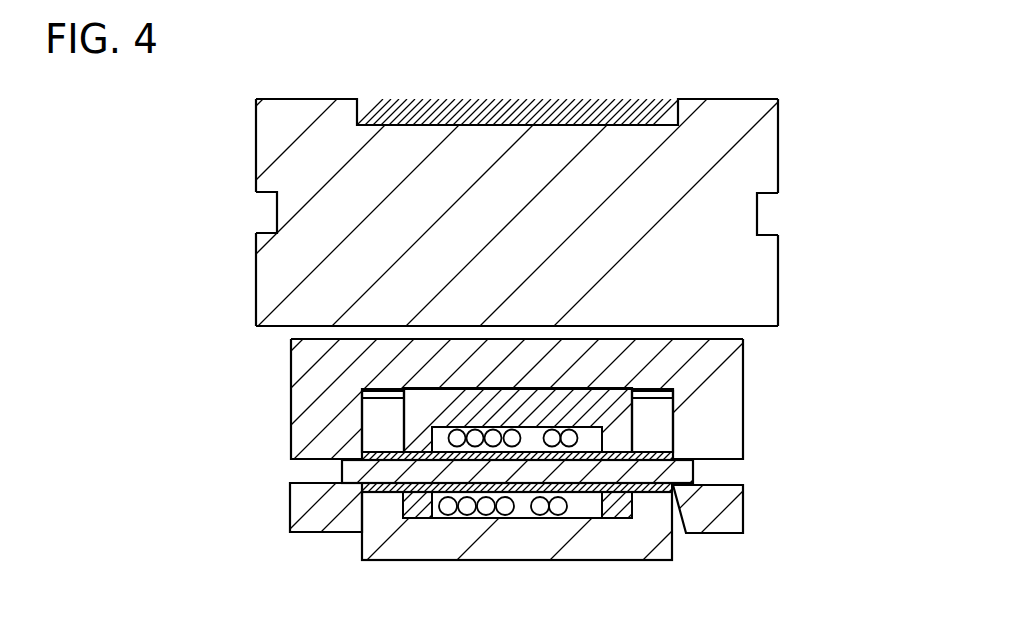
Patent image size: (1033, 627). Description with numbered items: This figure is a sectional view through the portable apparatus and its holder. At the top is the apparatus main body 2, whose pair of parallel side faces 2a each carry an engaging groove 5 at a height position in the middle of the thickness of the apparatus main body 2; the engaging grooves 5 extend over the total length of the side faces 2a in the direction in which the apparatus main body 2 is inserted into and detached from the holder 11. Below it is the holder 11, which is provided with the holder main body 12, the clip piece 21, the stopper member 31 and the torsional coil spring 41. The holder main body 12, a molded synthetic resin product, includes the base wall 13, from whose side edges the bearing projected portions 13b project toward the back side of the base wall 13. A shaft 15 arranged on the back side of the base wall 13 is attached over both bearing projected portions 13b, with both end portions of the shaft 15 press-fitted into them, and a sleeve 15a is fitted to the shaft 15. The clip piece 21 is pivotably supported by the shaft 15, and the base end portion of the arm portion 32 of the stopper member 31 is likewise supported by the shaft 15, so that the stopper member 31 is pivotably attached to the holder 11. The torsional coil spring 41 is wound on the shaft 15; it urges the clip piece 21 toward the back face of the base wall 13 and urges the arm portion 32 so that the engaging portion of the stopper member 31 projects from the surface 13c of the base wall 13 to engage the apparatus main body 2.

The apparatus main body 2 is at (255, 287).
The side faces 2a is at (779, 278).
The engaging grooves 5 is at (758, 215).
The holder 11 is at (499, 425).
The holder main body 12 is at (290, 393).
The base wall 13 is at (470, 362).
The bearing projected portions 13b is at (708, 505).
The surface of the base wall 13c is at (432, 338).
The shaft 15 is at (386, 473).
The sleeve 15a is at (645, 492).
The clip piece 21 is at (560, 562).
The stopper member 31 is at (547, 403).
The arm portion 32 is at (617, 440).
The torsional coil spring 41 is at (503, 512).